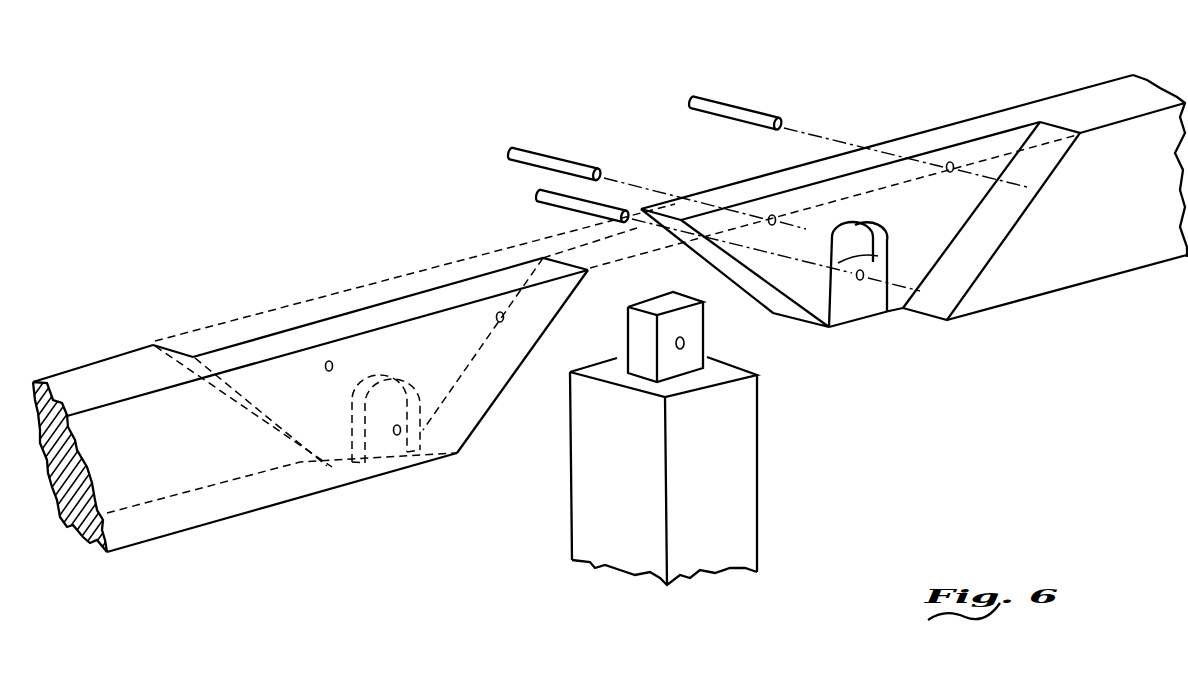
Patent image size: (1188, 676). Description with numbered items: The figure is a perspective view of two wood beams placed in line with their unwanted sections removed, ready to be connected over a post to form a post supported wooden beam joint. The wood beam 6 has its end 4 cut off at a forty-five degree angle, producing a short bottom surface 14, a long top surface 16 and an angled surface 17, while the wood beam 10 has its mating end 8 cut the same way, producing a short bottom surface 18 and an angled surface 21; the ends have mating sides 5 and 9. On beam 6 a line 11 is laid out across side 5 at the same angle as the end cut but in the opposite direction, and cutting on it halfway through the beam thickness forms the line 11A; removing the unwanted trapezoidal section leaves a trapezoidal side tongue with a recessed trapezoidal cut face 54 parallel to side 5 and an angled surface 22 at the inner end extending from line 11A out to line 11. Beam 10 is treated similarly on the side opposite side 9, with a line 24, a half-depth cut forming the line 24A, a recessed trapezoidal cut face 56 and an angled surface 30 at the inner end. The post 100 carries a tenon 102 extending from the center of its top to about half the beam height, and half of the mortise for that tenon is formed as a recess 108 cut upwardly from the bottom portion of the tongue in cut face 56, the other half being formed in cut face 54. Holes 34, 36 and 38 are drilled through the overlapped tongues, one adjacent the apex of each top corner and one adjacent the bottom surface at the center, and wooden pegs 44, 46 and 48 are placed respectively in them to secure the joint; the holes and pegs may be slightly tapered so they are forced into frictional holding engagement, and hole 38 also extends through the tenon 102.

The end of wood beam 4 is at (1000, 295).
The mating side 5 is at (1115, 227).
The wood beam 6 is at (1015, 100).
The mating end of wood beam 8 is at (284, 488).
The mating side 9 is at (124, 473).
The wood beam 10 is at (100, 353).
The line 11 is at (1007, 236).
The line 11A is at (990, 186).
The short bottom surface 14 is at (1077, 288).
The long top surface 16 is at (903, 146).
The angled surface 17 is at (719, 259).
The short bottom surface 18 is at (201, 531).
The angled surface 21 is at (531, 333).
The angled surface 22 is at (1067, 147).
The line 24 is at (205, 380).
The line 24A is at (280, 434).
The angled surface 30 is at (198, 365).
The hole 34 is at (324, 367).
The hole 36 is at (502, 323).
The hole 38 is at (395, 437).
The peg 44 is at (545, 162).
The peg 46 is at (733, 112).
The peg 48 is at (552, 200).
The recessed trapezoidal cut face 54 is at (914, 226).
The recessed trapezoidal cut face 56 is at (331, 325).
The post 100 is at (730, 458).
The tenon 102 is at (640, 332).
The recess 108 is at (355, 425).